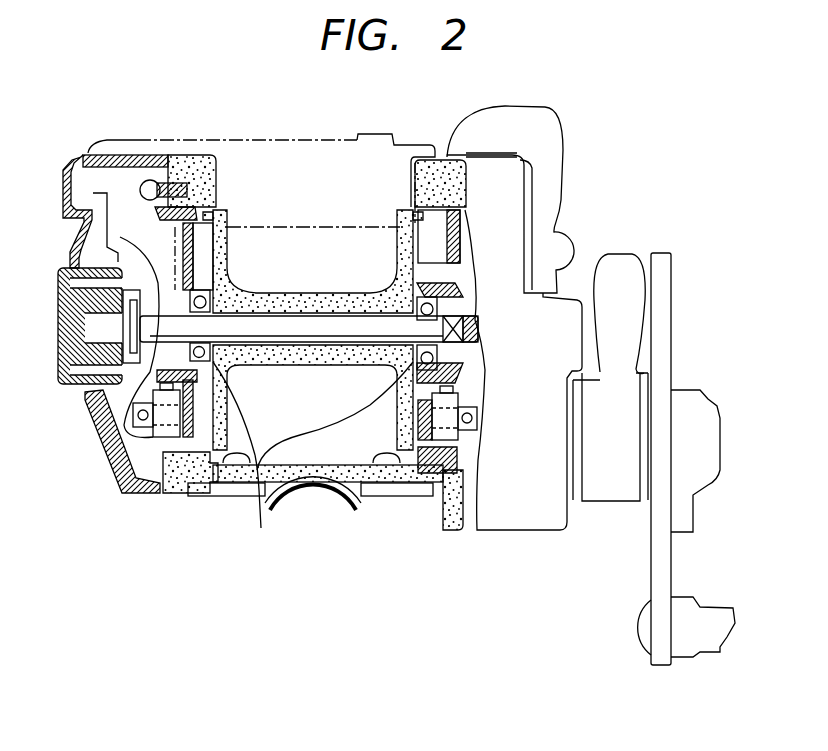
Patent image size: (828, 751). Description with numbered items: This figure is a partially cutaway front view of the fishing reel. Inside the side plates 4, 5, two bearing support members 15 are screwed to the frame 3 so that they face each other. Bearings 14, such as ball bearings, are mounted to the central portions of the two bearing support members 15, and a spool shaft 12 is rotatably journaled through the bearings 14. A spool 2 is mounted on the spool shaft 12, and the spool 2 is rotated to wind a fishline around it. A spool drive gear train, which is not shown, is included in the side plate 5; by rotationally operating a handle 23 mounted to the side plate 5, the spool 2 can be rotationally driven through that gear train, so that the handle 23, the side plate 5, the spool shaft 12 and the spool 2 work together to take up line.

The spool 2 is at (220, 263).
The frame 3 is at (437, 175).
The side plate 4 is at (142, 158).
The side plate 5 is at (503, 190).
The spool shaft 12 is at (343, 330).
The bearings 14 is at (313, 458).
The bearing support members 15 is at (181, 477).
The handle 23 is at (655, 555).